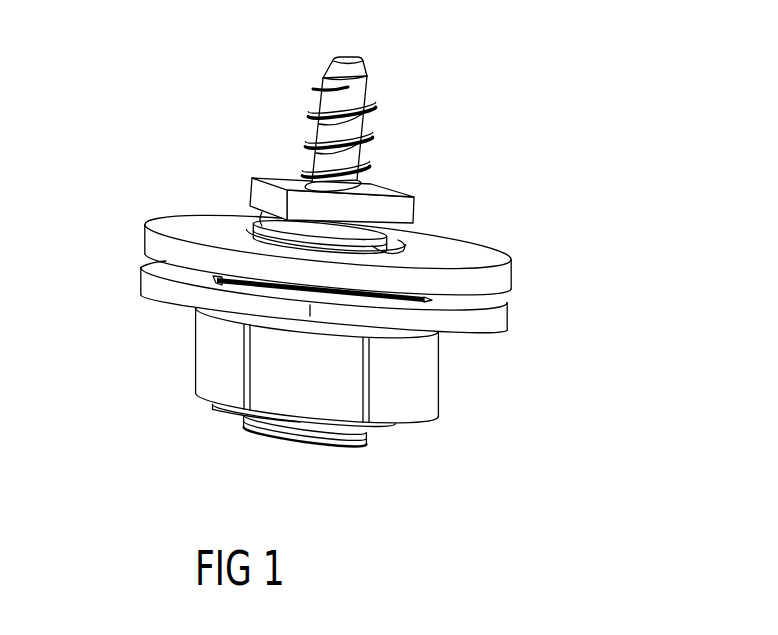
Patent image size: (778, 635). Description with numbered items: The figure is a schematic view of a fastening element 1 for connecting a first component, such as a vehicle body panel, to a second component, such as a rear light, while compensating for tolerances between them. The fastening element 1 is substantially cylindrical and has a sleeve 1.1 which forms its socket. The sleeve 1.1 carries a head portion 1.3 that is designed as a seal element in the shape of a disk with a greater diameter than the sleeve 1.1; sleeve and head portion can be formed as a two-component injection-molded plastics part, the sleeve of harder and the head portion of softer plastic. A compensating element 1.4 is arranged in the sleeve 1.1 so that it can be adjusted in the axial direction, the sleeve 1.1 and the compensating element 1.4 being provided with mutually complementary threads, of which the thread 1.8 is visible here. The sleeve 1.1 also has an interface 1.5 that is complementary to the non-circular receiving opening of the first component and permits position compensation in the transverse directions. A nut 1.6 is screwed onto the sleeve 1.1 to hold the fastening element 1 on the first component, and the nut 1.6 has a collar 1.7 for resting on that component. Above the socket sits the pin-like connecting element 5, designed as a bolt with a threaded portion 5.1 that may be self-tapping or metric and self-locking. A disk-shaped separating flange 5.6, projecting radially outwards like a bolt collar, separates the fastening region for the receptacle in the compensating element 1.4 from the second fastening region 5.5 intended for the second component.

The fastening element 1 is at (552, 77).
The sleeve 1.1 is at (498, 273).
The head portion 1.3 is at (404, 249).
The compensating element 1.4 is at (385, 335).
The interface 1.5 is at (426, 300).
The nut 1.6 is at (414, 376).
The collar 1.7 is at (157, 288).
The thread 1.8 is at (405, 236).
The connecting element 5 is at (347, 125).
The threaded portion 5.1 is at (378, 104).
The second fastening region 5.5 is at (305, 118).
The separating flange 5.6 is at (262, 197).